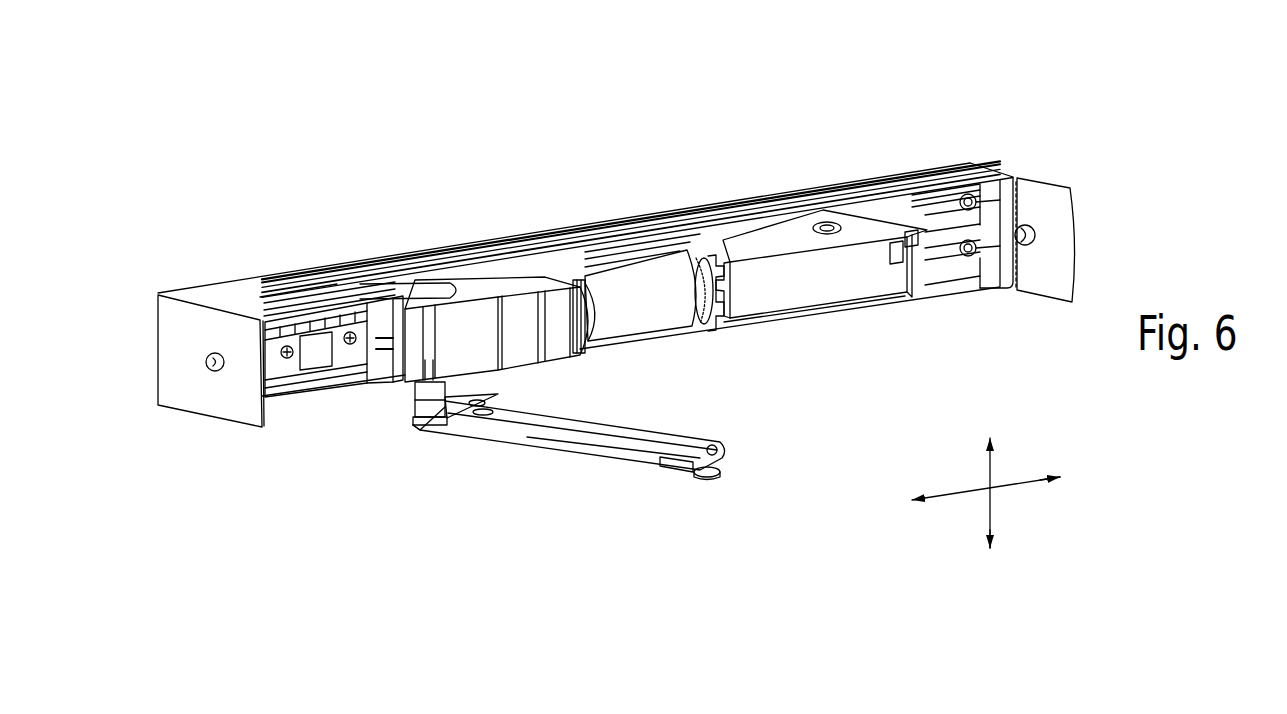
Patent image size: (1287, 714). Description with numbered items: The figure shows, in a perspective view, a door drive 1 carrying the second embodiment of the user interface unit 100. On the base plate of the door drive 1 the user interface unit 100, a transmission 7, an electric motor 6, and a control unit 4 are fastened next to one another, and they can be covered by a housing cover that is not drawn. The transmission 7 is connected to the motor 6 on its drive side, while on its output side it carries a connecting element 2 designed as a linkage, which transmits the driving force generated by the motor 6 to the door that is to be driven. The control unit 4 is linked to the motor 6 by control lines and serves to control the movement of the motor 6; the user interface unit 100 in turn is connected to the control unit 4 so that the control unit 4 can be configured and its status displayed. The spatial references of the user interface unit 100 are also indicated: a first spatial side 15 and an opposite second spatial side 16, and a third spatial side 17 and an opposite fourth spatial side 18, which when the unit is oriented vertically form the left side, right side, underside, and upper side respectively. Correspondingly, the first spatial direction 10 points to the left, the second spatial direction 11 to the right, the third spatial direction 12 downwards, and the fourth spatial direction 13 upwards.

The door drive 1 is at (792, 168).
The connecting element 2 is at (670, 474).
The control unit 4 is at (848, 282).
The electric motor 6 is at (659, 342).
The transmission 7 is at (487, 291).
The first spatial direction 10 is at (950, 488).
The second spatial direction 11 is at (1020, 488).
The third spatial direction 12 is at (987, 515).
The fourth spatial direction 13 is at (992, 471).
The first spatial side 15 is at (172, 425).
The second spatial side 16 is at (1081, 156).
The third spatial side 17 is at (560, 490).
The fourth spatial side 18 is at (599, 136).
The user interface unit 100 is at (306, 316).